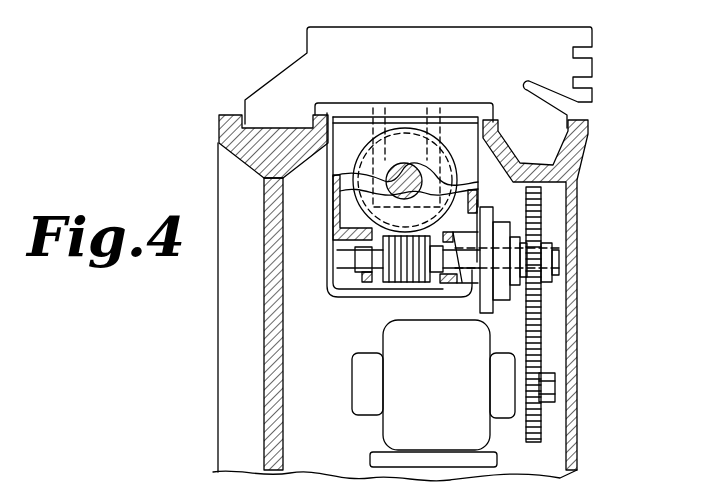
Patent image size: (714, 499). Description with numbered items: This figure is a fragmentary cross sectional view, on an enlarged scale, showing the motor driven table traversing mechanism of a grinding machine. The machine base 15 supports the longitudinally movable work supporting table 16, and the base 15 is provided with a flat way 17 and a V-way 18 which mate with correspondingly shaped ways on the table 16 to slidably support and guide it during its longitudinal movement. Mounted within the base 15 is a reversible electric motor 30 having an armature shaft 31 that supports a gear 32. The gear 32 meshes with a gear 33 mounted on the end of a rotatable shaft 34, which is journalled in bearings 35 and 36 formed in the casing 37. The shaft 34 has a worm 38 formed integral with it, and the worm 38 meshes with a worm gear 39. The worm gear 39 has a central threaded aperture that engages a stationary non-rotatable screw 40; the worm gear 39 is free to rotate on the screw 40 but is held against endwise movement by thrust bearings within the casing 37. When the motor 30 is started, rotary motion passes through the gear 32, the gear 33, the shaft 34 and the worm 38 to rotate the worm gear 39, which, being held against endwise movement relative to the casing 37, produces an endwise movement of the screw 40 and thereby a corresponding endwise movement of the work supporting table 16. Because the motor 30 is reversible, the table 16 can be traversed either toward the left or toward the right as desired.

The base 15 is at (265, 392).
The work supporting table 16 is at (303, 58).
The flat way 17 is at (220, 143).
The V-way 18 is at (577, 140).
The reversible electric motor 30 is at (388, 347).
The armature shaft 31 is at (523, 383).
The gear 32 is at (540, 425).
The gear 33 is at (542, 302).
The rotatable shaft 34 is at (363, 258).
The bearing 35 is at (343, 243).
The bearing 36 is at (460, 286).
The casing 37 is at (333, 290).
The worm 38 is at (395, 290).
The worm gear 39 is at (352, 188).
The screw 40 is at (393, 181).